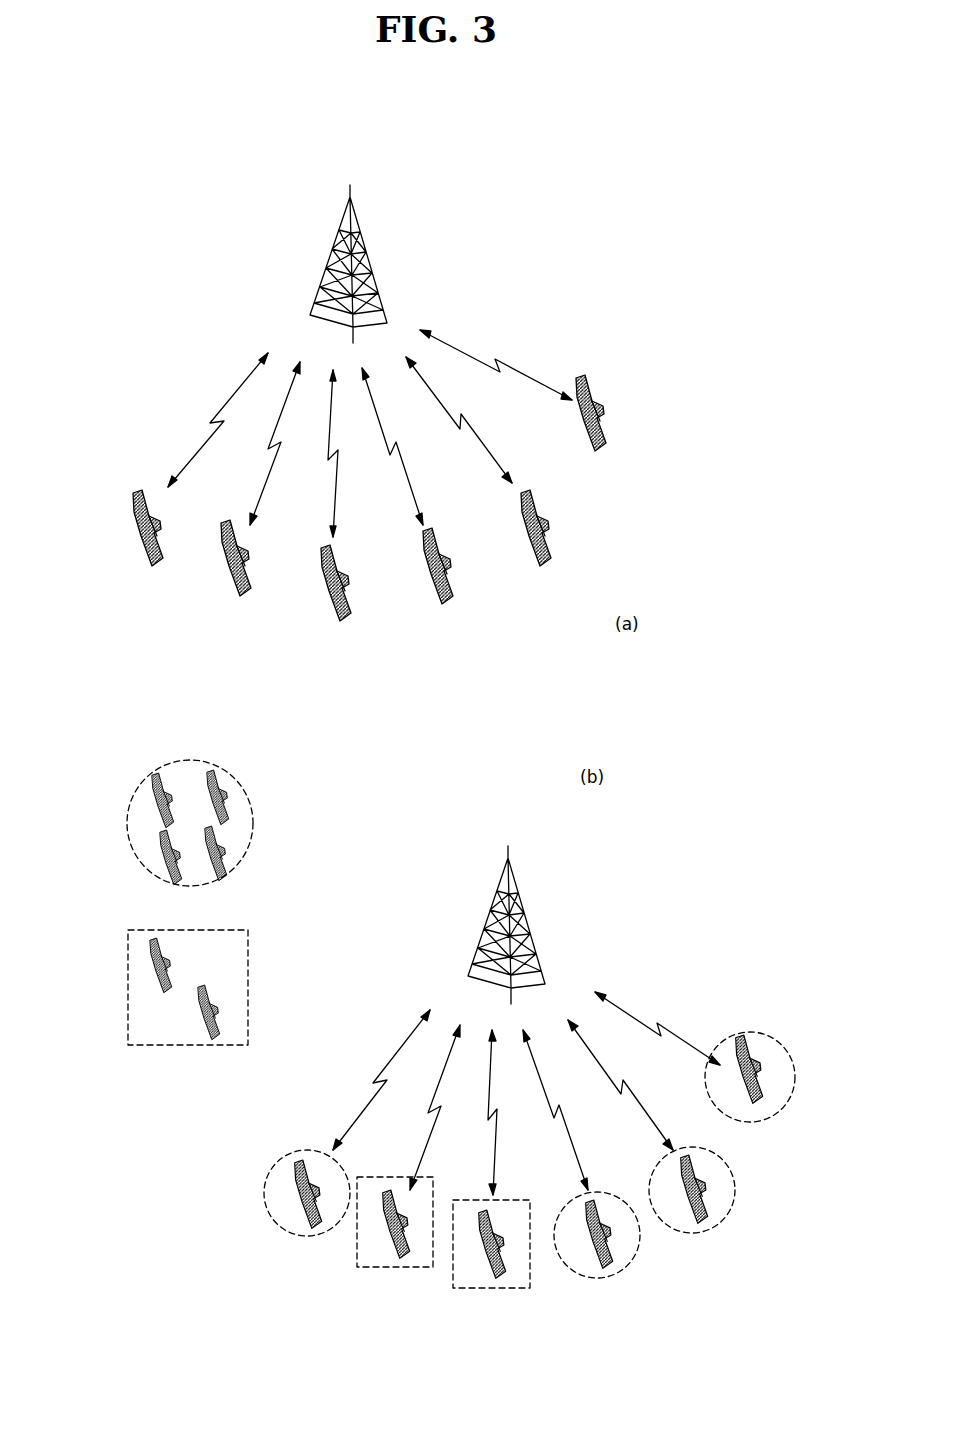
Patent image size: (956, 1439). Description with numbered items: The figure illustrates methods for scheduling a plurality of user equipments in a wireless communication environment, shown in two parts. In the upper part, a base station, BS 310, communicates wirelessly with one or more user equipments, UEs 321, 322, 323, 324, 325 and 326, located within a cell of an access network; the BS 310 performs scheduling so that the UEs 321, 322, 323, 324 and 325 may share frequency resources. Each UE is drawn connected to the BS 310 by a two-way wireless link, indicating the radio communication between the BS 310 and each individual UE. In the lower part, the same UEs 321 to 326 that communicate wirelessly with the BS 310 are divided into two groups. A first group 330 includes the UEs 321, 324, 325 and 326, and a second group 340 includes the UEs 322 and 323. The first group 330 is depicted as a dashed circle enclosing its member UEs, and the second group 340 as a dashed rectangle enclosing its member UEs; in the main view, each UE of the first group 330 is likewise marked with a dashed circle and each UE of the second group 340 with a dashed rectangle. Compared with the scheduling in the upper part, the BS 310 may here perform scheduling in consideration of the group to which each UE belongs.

The BS 310 is at (336, 256).
The UE 321 is at (143, 562).
The UE 322 is at (232, 592).
The UE 323 is at (330, 615).
The UE 324 is at (436, 600).
The UE 325 is at (530, 562).
The UE 326 is at (585, 446).
The first group 330 is at (250, 789).
The second group 340 is at (252, 968).